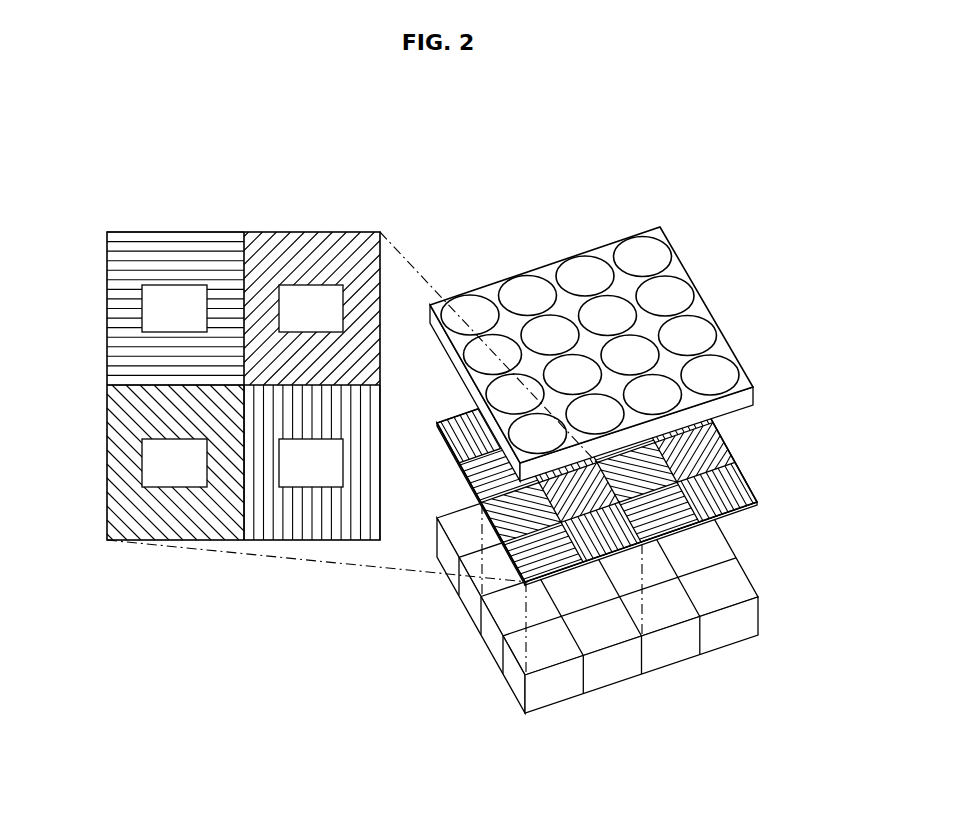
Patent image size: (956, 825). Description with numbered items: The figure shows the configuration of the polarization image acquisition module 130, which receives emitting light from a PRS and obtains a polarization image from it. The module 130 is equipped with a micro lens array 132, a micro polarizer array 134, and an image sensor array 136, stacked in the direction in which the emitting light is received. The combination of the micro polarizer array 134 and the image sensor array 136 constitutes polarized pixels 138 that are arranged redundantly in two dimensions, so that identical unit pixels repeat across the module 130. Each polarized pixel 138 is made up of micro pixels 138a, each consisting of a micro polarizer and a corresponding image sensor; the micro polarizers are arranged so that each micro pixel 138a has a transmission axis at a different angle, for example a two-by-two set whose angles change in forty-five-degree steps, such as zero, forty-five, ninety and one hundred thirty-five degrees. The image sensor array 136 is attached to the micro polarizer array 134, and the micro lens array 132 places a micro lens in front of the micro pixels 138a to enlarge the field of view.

The polarization image acquisition module 130 is at (636, 413).
The micro lens array 132 is at (706, 303).
The micro polarizer array 134 is at (724, 438).
The image sensor array 136 is at (749, 577).
The polarized pixel 138 is at (203, 335).
The micro pixel 138a is at (120, 350).